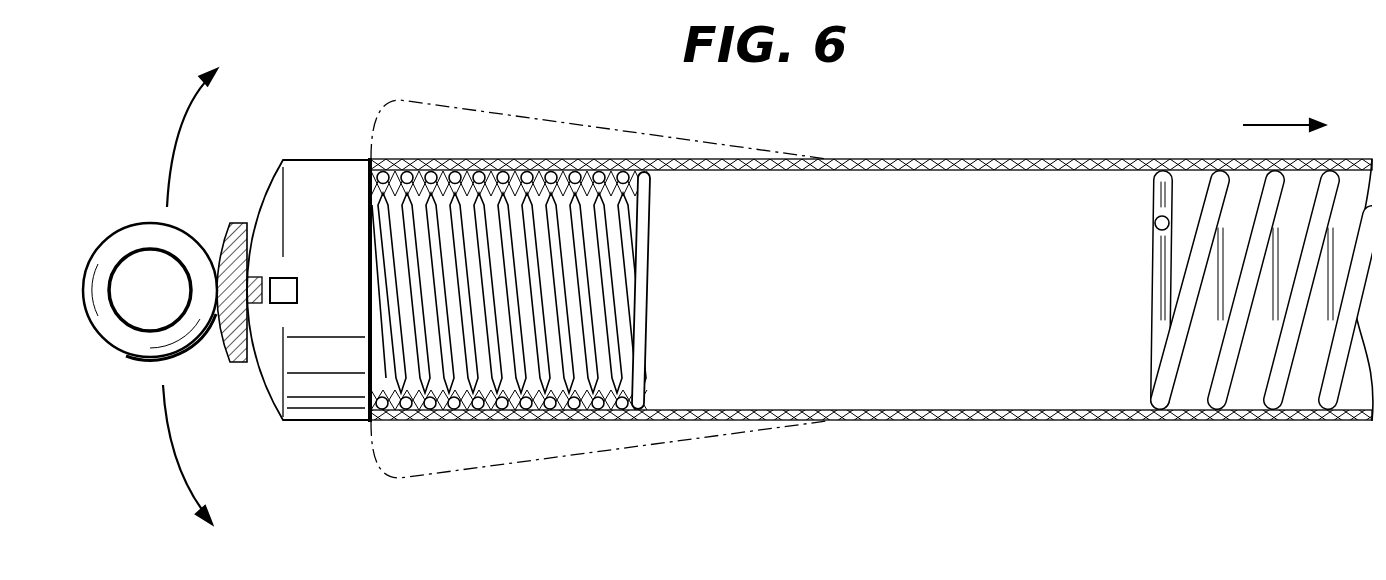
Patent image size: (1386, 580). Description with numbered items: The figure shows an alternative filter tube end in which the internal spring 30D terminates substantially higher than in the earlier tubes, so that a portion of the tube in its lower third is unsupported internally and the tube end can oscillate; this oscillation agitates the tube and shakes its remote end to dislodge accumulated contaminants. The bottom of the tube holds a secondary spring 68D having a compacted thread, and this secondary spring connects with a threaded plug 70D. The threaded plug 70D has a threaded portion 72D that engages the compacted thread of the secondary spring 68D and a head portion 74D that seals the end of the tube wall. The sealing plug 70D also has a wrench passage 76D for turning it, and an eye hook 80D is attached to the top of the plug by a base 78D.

The spring 30D is at (1158, 255).
The secondary spring 68D is at (648, 210).
The threaded plug 70D is at (315, 432).
The threaded portion 72D is at (600, 288).
The head portion 74D is at (317, 177).
The wrench passage 76D is at (283, 290).
The base 78D is at (219, 223).
The eye hook 80D is at (147, 233).